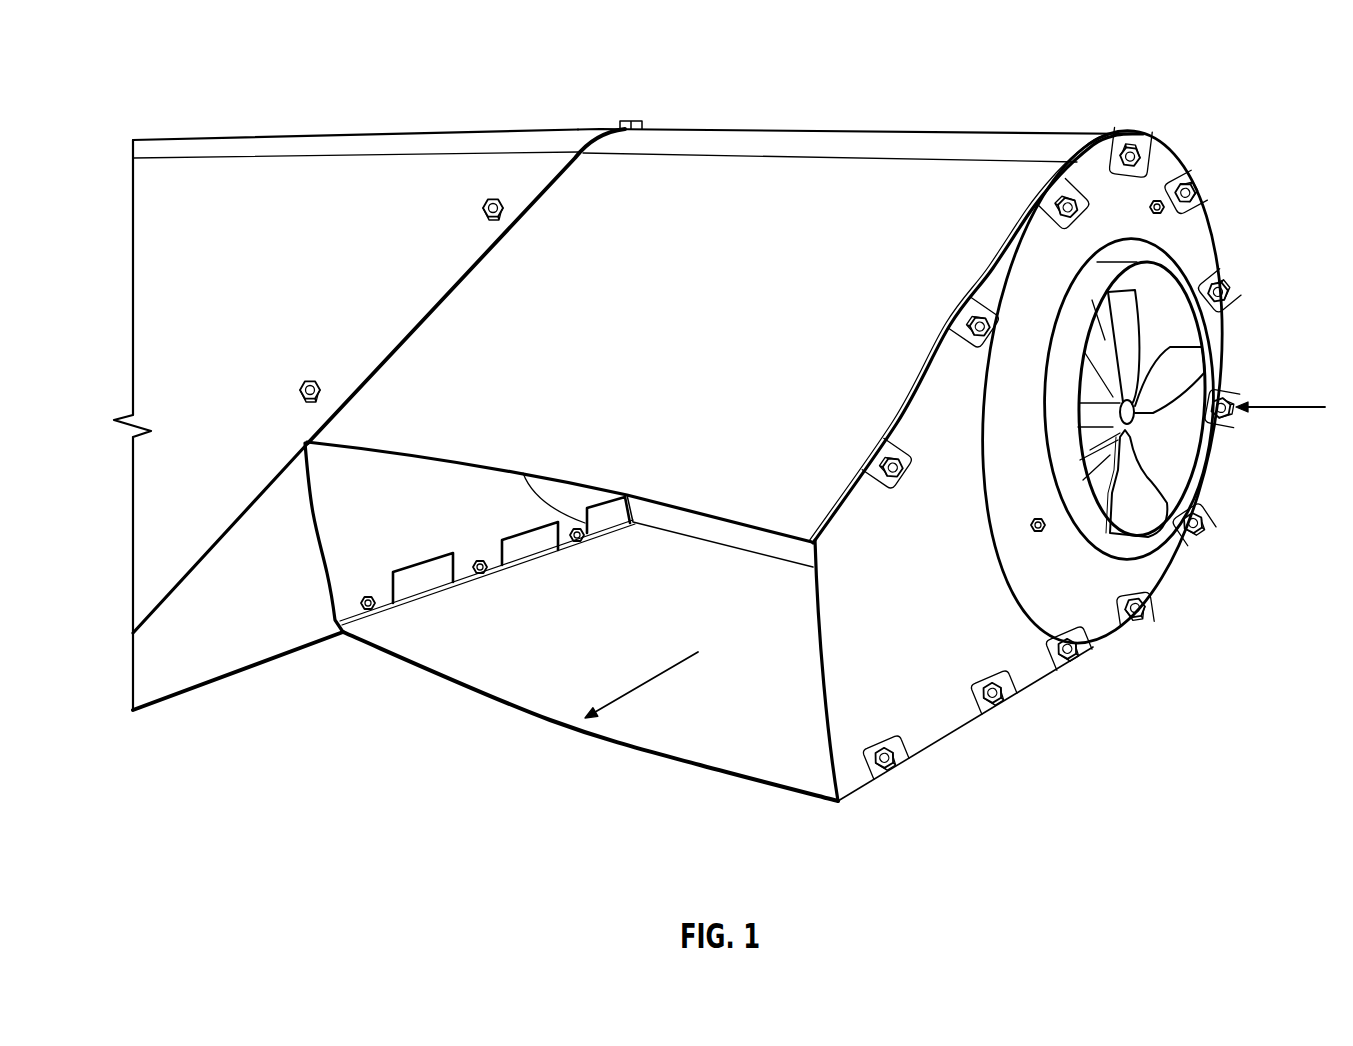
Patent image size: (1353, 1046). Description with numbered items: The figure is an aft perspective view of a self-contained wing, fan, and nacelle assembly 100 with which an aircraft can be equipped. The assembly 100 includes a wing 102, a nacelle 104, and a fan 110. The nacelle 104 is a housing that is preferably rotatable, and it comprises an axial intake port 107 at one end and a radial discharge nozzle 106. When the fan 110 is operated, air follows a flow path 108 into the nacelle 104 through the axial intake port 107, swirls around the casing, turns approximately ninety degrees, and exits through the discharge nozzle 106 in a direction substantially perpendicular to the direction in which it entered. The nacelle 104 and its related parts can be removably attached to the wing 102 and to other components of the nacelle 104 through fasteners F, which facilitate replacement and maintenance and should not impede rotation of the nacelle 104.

The wing, fan, and nacelle assembly 100 is at (155, 82).
The wing 102 is at (292, 295).
The nacelle 104 is at (738, 317).
The discharge nozzle 106 is at (778, 735).
The axial intake port 107 is at (1183, 336).
The flow path 108 is at (1302, 410).
The fan 110 is at (1138, 466).
The fasteners F is at (1092, 657).